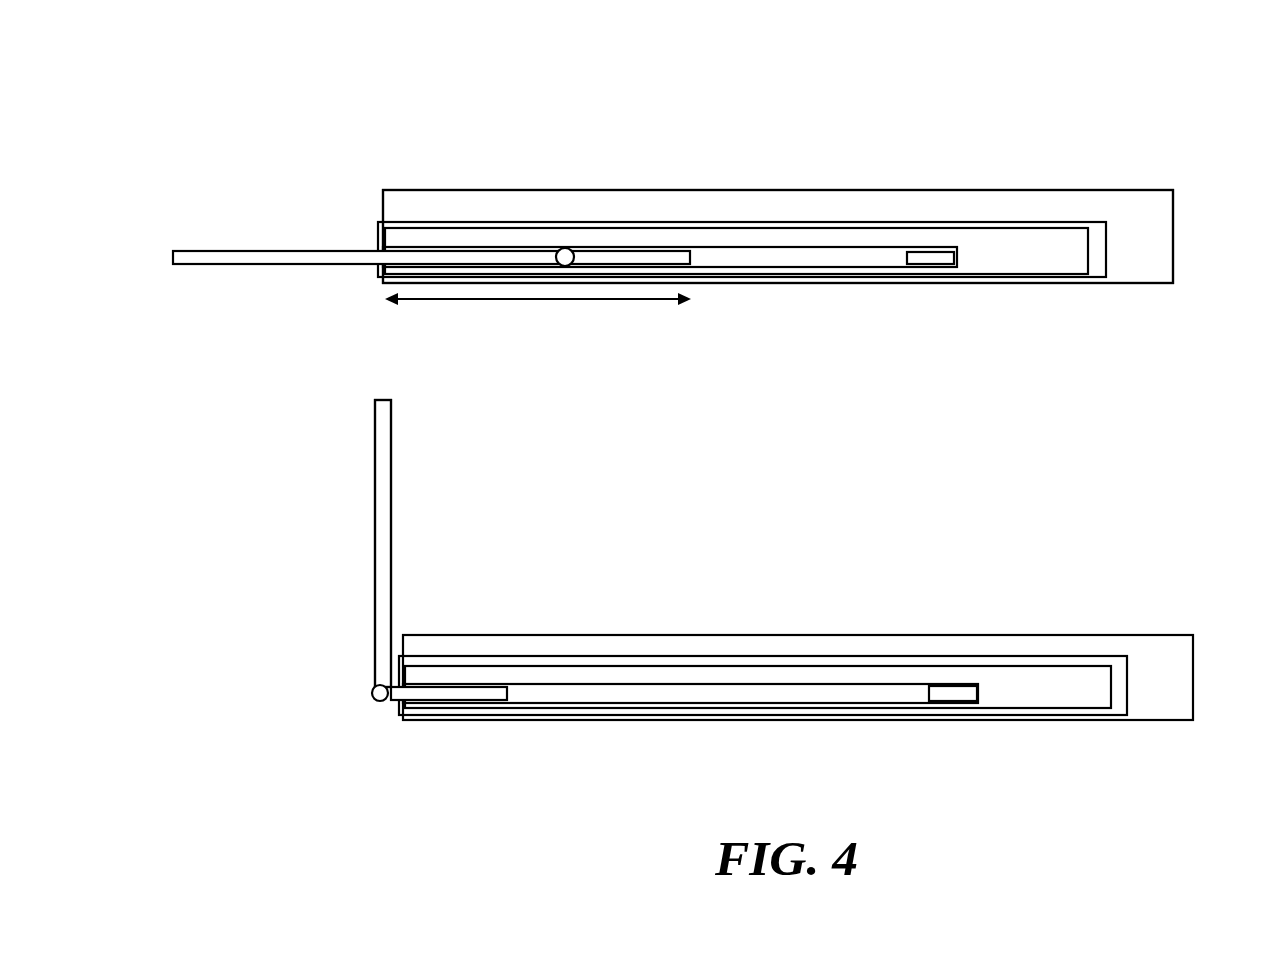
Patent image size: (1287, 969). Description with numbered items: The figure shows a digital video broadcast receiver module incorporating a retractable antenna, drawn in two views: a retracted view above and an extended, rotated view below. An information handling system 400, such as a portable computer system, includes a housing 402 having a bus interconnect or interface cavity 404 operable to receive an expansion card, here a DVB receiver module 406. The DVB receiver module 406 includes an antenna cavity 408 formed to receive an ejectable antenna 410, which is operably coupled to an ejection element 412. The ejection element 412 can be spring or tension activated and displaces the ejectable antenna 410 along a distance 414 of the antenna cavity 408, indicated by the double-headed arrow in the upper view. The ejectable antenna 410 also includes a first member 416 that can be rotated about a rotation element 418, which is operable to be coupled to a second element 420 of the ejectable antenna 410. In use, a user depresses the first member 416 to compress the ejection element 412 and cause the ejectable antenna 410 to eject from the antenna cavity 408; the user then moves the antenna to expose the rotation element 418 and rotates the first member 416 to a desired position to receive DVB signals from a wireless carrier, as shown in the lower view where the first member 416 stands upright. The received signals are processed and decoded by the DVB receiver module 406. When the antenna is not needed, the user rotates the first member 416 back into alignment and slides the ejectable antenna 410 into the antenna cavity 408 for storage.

The information handling system 400 is at (296, 147).
The housing 402 is at (1173, 212).
The interface cavity 404 is at (1107, 275).
The digital video broadcast receiver module 406 is at (1023, 257).
The antenna cavity 408 is at (805, 257).
The ejectable antenna 410 is at (283, 256).
The ejection element 412 is at (922, 258).
The distance 414 is at (538, 317).
The first member 416 is at (373, 518).
The rotation element 418 is at (372, 692).
The second element 420 is at (395, 698).